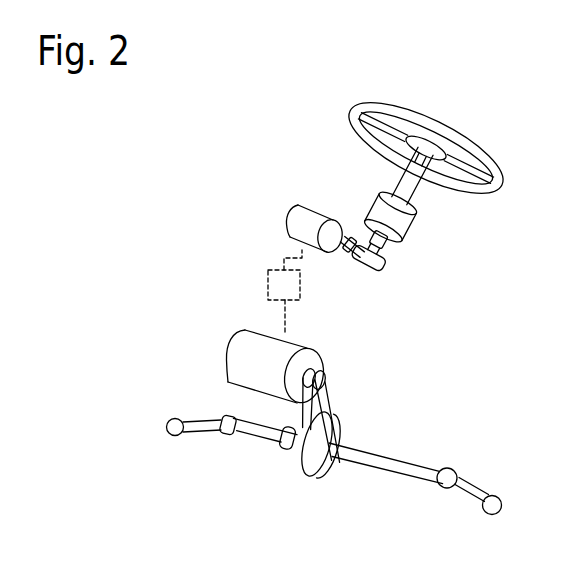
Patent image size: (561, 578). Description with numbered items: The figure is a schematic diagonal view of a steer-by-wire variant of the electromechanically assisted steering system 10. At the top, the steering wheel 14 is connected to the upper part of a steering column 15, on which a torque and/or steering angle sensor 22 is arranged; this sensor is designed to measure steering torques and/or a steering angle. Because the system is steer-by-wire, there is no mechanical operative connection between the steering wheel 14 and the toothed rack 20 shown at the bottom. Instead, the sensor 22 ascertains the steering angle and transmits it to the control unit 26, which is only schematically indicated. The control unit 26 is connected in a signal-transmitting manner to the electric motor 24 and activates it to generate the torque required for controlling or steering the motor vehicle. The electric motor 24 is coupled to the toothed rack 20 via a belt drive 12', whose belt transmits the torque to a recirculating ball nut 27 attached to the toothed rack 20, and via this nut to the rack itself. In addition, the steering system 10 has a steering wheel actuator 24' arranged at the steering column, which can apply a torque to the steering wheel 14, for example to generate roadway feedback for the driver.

The steering system 10 is at (292, 122).
The steering wheel 14 is at (456, 141).
The steering column 15 is at (410, 190).
The torque and/or steering angle sensor 22 is at (408, 233).
The steering wheel actuator 24' is at (298, 211).
The control unit 26 is at (268, 285).
The electric motor 24 is at (247, 355).
The belt drive 12' is at (367, 399).
The recirculating ball nut 27 is at (287, 450).
The toothed rack 20 is at (425, 472).